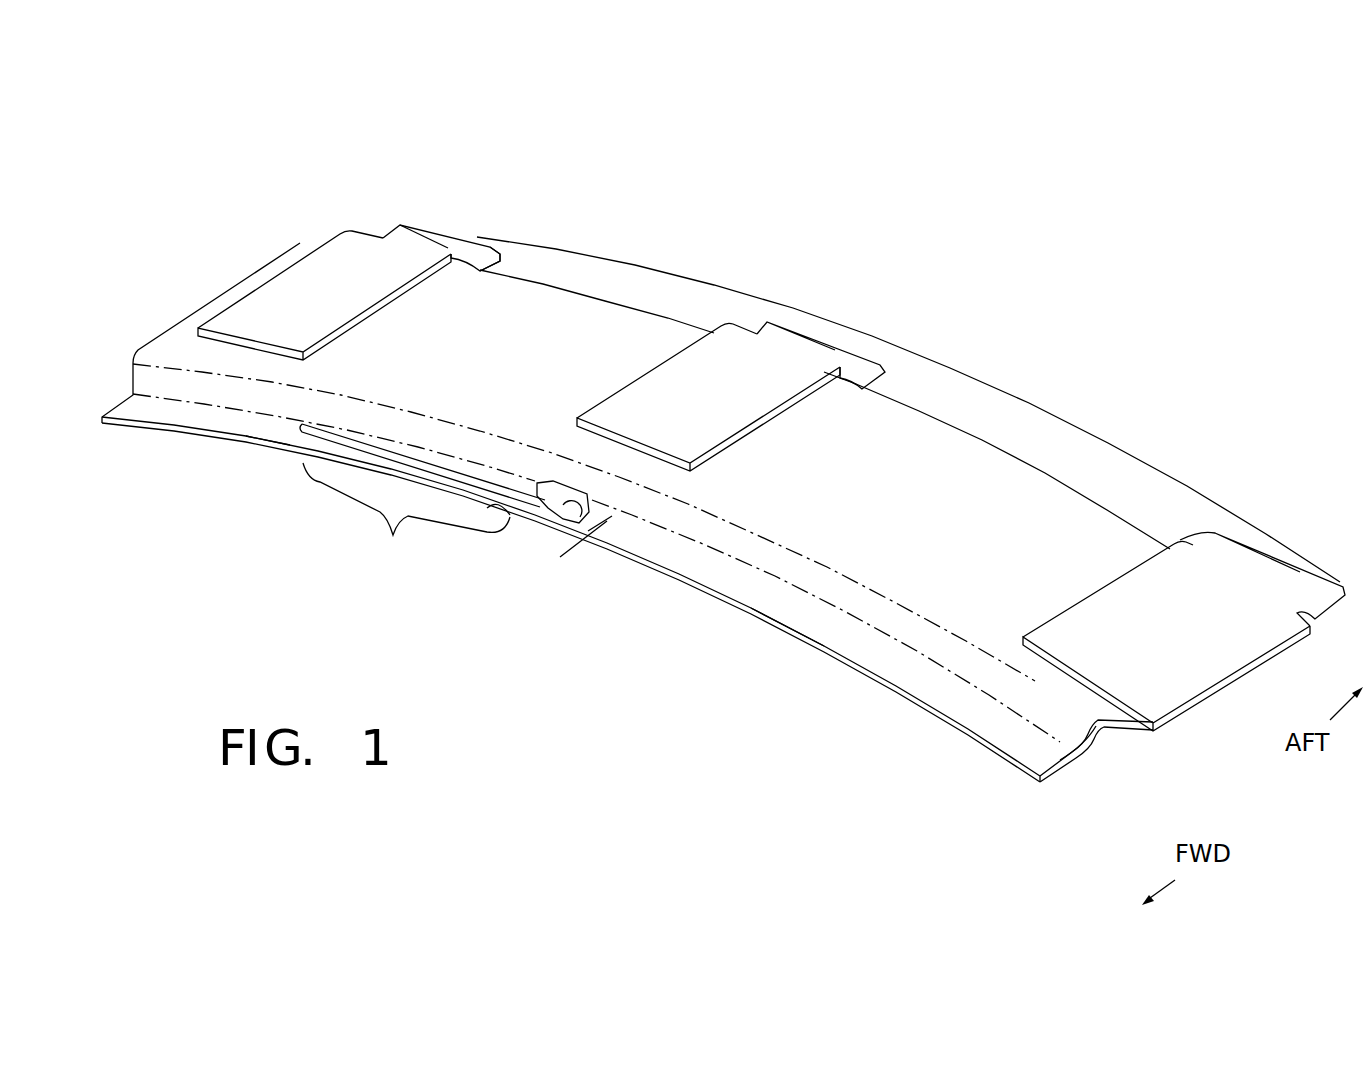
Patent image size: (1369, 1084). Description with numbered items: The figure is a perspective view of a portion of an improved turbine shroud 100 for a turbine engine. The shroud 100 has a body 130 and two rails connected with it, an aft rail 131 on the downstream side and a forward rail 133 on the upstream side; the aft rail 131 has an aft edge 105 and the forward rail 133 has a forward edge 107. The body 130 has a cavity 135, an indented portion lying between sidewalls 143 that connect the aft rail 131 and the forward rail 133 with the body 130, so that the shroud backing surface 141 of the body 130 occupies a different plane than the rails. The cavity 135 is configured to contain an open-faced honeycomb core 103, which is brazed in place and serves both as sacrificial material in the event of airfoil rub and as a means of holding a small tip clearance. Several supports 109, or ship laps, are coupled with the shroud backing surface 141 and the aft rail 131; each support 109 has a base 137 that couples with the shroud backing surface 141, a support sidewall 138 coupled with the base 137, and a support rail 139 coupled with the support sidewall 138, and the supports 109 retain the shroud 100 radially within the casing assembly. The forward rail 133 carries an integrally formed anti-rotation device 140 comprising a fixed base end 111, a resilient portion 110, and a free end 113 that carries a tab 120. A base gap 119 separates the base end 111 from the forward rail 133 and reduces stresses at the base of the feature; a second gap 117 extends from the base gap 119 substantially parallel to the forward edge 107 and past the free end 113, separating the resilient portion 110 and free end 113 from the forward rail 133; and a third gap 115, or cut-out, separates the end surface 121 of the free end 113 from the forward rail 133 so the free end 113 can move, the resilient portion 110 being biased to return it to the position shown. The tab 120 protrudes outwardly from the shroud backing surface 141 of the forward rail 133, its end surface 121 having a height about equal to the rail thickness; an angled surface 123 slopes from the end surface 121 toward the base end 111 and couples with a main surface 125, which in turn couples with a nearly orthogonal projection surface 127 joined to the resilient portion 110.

The shroud 100 is at (645, 171).
The honeycomb core 103 is at (1133, 776).
The aft edge 105 is at (1060, 410).
The forward edge 107 is at (816, 657).
The support 109 is at (377, 250).
The resilient portion 110 is at (385, 530).
The base end 111 is at (273, 443).
The free end 113 is at (528, 533).
The third gap 115 is at (600, 565).
The second gap 117 is at (448, 455).
The base gap 119 is at (290, 455).
The tab 120 is at (590, 493).
The end surface 121 is at (597, 540).
The angled surface 123 is at (590, 528).
The main surface 125 is at (573, 503).
The projection surface 127 is at (487, 510).
The body 130 is at (703, 299).
The aft rail 131 is at (623, 275).
The forward rail 133 is at (128, 410).
The cavity 135 is at (1095, 748).
The base 137 is at (282, 300).
The support sidewall 138 is at (410, 252).
The support rail 139 is at (480, 250).
The anti-rotation device 140 is at (395, 575).
The shroud backing surface 141 is at (984, 563).
The sidewall 143 is at (1067, 733).